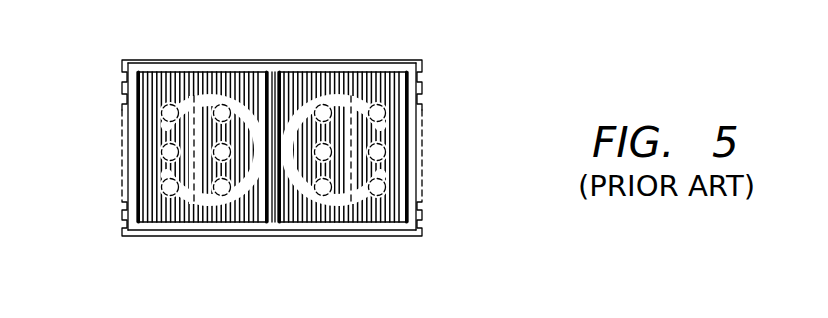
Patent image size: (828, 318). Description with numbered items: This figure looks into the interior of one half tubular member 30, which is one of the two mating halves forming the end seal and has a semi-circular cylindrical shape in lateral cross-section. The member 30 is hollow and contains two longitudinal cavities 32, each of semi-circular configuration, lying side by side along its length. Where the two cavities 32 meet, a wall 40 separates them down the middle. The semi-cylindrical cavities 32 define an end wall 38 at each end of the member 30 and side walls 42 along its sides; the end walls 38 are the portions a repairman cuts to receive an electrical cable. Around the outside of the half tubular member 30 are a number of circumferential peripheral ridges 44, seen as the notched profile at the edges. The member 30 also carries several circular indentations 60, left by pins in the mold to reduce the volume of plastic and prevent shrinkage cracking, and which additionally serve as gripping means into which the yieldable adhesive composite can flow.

The half tubular member 30 is at (426, 59).
The longitudinal cavities 32 is at (145, 212).
The end wall 38 is at (320, 72).
The wall 40 is at (273, 76).
The side walls 42 is at (130, 142).
The circumferential peripheral ridges 44 is at (122, 71).
The circular indentations 60 is at (177, 194).